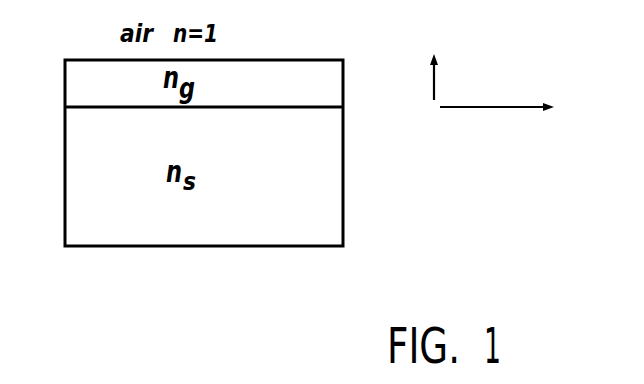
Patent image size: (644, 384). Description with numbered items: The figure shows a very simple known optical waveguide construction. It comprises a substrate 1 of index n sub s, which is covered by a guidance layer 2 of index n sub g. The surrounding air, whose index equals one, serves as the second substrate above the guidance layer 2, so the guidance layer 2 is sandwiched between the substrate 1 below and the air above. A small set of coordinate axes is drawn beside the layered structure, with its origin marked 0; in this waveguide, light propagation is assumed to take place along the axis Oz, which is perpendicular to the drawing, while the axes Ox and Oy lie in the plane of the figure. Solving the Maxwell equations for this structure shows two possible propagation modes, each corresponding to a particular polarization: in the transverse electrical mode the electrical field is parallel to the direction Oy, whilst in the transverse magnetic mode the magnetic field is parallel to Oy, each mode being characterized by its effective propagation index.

The substrate 1 is at (315, 205).
The guidance layer 2 is at (80, 82).
The coordinate origin 0 is at (488, 80).